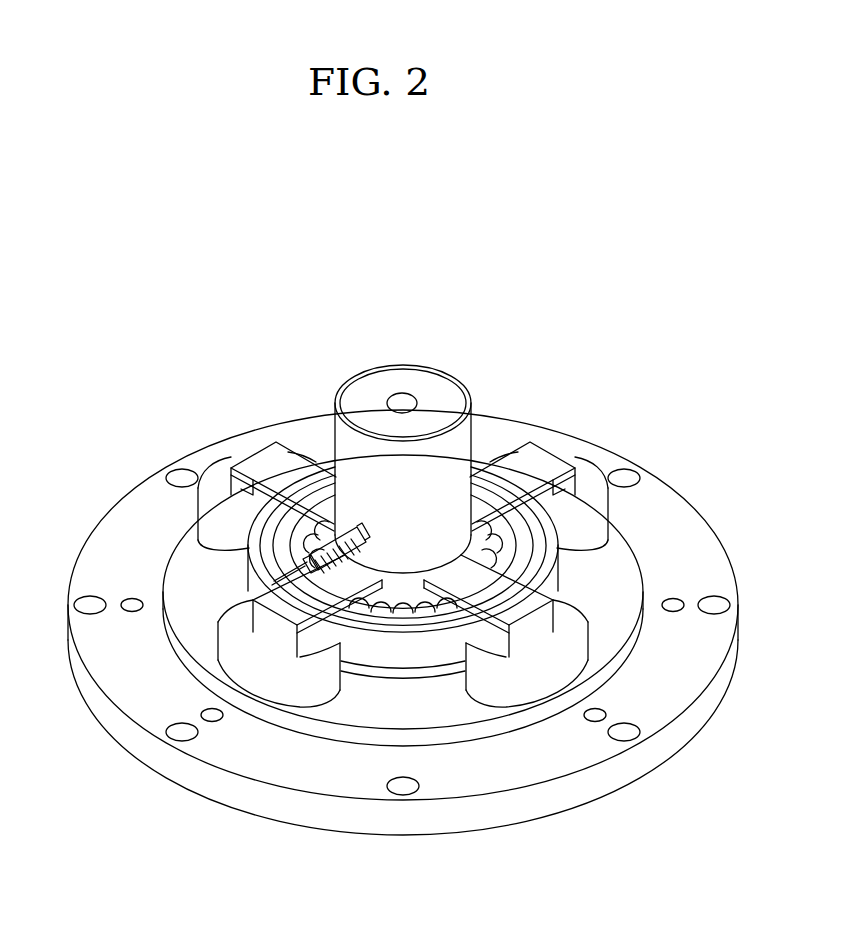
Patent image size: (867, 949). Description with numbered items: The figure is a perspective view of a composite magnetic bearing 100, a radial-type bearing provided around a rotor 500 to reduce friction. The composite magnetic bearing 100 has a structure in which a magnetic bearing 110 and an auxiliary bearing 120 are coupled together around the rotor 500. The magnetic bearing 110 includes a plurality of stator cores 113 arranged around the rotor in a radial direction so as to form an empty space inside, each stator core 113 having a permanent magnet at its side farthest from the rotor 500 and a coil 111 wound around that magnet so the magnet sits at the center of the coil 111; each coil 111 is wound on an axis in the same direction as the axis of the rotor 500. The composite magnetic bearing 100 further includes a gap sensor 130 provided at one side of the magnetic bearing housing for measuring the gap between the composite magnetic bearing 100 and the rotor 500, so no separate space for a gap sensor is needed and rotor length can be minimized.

The composite magnetic bearing 100 is at (192, 382).
The magnetic bearing 110 is at (72, 463).
The coil 111 is at (230, 627).
The stator core 113 is at (277, 600).
The auxiliary bearing 120 is at (403, 613).
The gap sensor 130 is at (190, 480).
The rotor 500 is at (440, 384).